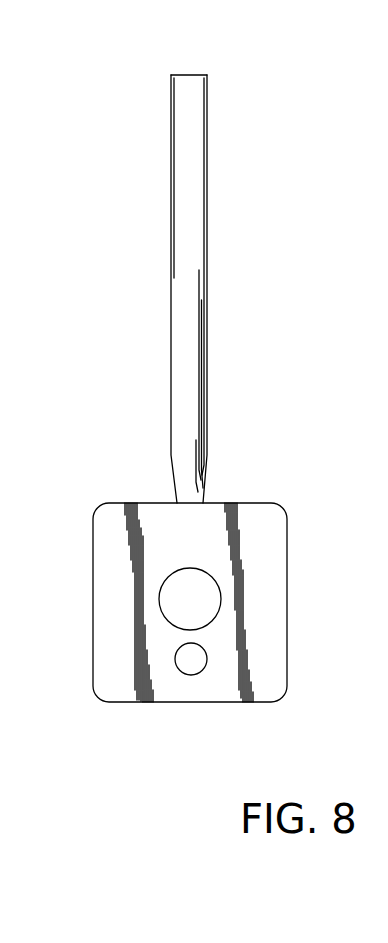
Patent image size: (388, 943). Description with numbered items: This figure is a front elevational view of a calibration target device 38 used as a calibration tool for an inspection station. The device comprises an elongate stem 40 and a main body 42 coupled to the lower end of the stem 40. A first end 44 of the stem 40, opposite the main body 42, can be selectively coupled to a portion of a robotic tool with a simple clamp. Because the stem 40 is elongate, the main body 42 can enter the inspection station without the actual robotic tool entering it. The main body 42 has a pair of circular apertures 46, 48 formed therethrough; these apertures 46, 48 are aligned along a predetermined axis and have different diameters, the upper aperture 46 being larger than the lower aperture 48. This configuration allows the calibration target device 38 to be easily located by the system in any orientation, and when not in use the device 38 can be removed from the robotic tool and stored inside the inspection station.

The calibration target device 38 is at (100, 378).
The stem 40 is at (207, 158).
The main body 42 is at (280, 503).
The first end 44 is at (207, 76).
The circular aperture 46 is at (194, 614).
The circular aperture 48 is at (193, 668).